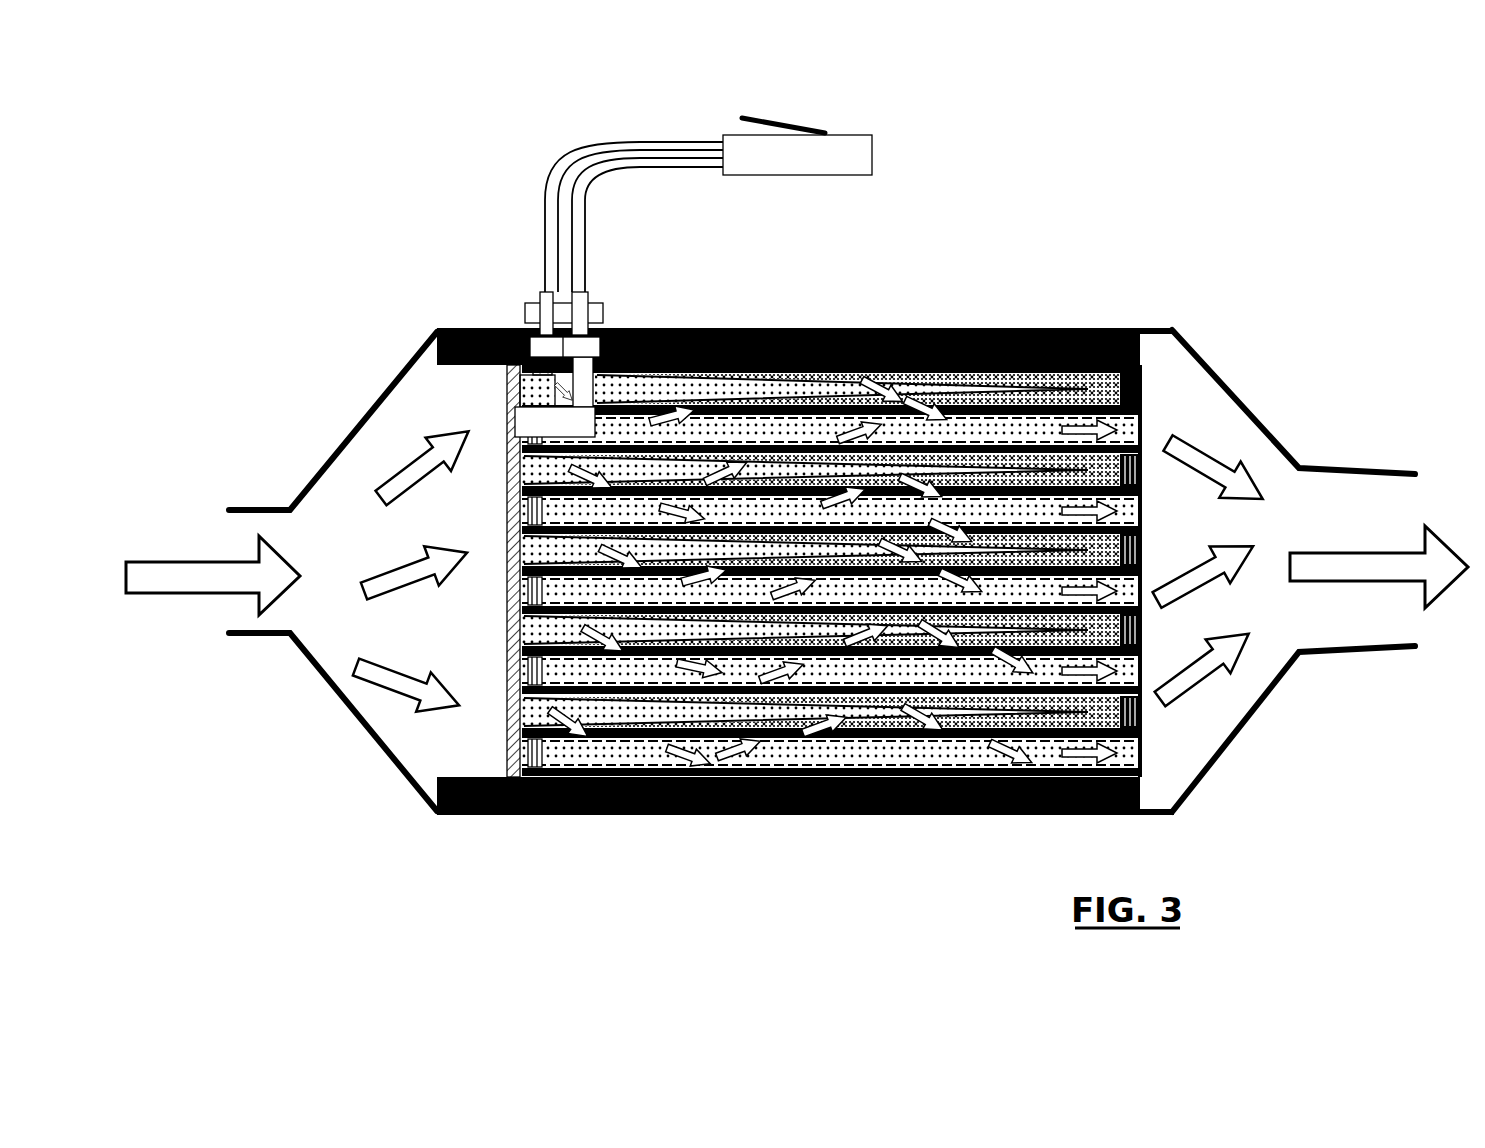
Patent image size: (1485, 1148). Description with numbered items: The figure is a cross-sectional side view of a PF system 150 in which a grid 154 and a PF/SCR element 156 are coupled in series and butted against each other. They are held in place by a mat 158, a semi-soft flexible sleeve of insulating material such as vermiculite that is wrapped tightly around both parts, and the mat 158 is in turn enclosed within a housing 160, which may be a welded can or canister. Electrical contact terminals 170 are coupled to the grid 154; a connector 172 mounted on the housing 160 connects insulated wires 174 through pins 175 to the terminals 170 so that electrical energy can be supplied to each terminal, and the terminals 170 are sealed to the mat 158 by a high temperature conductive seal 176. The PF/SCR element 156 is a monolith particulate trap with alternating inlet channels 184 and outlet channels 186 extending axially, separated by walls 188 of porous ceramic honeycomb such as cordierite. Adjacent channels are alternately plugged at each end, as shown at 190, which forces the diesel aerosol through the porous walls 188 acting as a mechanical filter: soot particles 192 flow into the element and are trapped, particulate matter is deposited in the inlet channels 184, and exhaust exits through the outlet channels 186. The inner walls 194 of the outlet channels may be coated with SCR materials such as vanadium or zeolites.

The PF system 150 is at (1087, 218).
The grid 154 is at (512, 815).
The PF/SCR element 156 is at (1170, 328).
The mat 158 is at (1147, 343).
The housing 160 is at (1140, 362).
The electrical contact terminals 170 is at (505, 416).
The connector 172 is at (602, 318).
The insulated wires 174 is at (703, 160).
The pins 175 is at (527, 315).
The high temperature conductive seal 176 is at (508, 327).
The inlet cells/channels 184 is at (1140, 604).
The outlet cells/channels 186 is at (1142, 672).
The walls 188 is at (748, 327).
The plugs 190 is at (505, 550).
The soot particles 192 is at (1140, 388).
The inner walls 194 is at (505, 640).